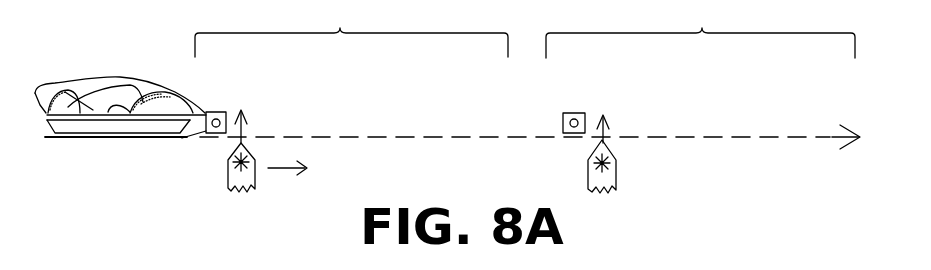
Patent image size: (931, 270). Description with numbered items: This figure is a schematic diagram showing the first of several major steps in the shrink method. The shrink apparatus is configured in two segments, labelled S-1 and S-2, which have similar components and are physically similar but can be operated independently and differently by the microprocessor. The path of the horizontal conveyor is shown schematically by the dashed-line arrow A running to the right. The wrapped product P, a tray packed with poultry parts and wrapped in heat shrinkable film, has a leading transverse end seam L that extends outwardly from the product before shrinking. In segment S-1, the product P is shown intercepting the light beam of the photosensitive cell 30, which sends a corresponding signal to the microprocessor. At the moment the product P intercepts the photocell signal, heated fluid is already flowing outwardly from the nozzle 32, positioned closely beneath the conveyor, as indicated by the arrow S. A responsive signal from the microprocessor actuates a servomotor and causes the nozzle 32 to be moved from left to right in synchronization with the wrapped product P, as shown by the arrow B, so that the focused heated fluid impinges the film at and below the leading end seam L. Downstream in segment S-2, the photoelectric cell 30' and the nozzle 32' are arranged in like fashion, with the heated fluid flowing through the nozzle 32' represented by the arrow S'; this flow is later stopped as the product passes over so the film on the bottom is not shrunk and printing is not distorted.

The product P is at (124, 110).
The leading transverse end seam L is at (214, 111).
The photosensitive cell 30 is at (248, 95).
The heated fluid flow S is at (260, 125).
The nozzle 32 is at (209, 176).
The nozzle travel direction B is at (269, 168).
The photoelectric cell 30' is at (596, 101).
The heated fluid flow S' is at (624, 125).
The nozzle 32' is at (631, 169).
The conveyor path A is at (785, 138).
The first segment S-1 is at (351, 30).
The second segment S-2 is at (700, 31).